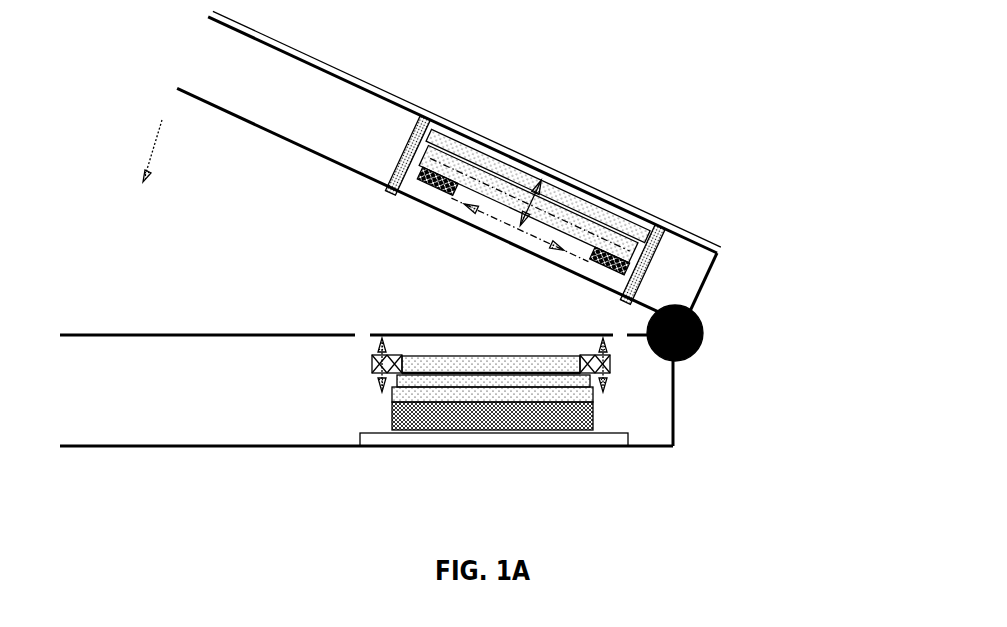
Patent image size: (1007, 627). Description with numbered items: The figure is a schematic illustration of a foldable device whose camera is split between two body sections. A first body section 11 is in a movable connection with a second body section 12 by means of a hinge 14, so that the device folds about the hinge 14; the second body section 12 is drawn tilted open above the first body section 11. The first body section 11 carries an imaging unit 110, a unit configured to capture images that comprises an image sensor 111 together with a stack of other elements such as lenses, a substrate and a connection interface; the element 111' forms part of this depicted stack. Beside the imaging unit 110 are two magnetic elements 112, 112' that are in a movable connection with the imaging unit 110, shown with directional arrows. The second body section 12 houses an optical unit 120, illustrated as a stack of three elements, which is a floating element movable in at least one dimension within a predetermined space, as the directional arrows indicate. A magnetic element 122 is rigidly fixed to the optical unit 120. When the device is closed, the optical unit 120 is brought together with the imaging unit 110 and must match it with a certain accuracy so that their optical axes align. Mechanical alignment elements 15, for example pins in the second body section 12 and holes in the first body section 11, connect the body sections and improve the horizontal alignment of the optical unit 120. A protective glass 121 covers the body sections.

The first body section 11 is at (673, 395).
The second body section 12 is at (445, 172).
The hinge 14 is at (703, 338).
The mechanical alignment element 15 is at (407, 155).
The imaging unit 110 is at (372, 414).
The image sensor 111 is at (469, 460).
The lower layer 111' is at (492, 453).
The magnetic element 112 is at (417, 330).
The magnetic element 112' is at (557, 330).
The optical unit 120 is at (528, 206).
The protective glass 121 is at (467, 129).
The magnetic element 122 is at (523, 221).